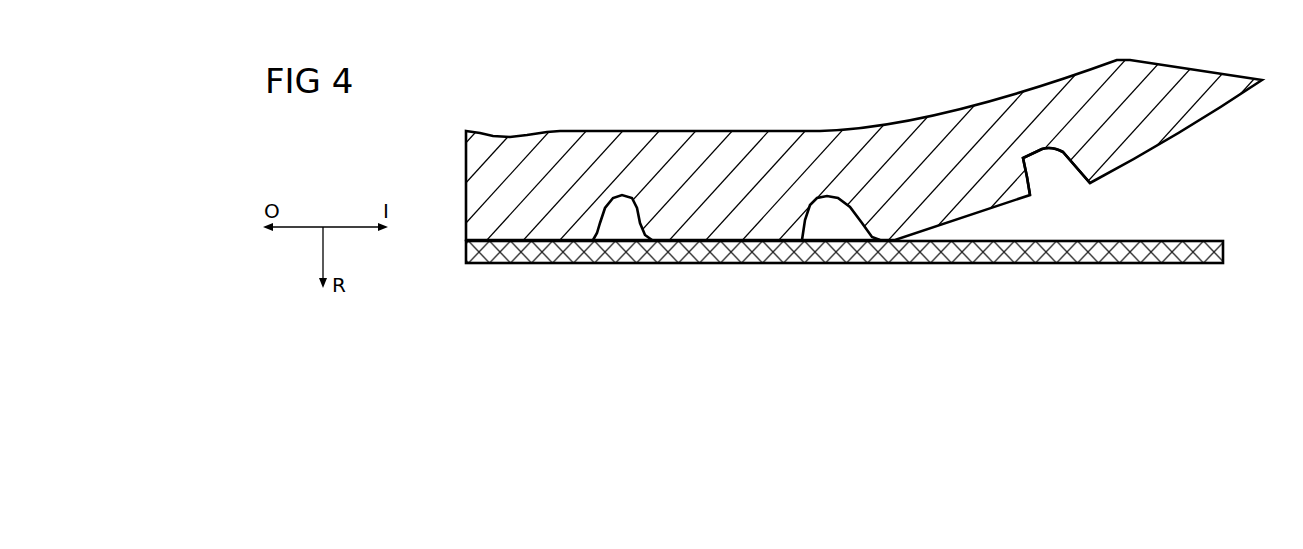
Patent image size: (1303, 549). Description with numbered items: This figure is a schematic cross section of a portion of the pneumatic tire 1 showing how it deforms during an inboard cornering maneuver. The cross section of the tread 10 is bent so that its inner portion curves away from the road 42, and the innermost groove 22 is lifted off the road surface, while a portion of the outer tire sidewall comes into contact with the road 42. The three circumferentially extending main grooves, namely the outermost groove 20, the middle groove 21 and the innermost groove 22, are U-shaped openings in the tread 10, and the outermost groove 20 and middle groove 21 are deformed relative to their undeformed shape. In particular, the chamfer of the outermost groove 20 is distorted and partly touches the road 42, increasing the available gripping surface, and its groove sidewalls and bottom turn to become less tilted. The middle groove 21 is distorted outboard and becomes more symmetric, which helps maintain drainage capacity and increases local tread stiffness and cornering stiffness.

The pneumatic tire 1 is at (684, 95).
The tread 10 is at (928, 155).
The outermost groove 20 is at (618, 212).
The middle groove 21 is at (830, 212).
The innermost groove 22 is at (1037, 170).
The road 42 is at (1138, 250).